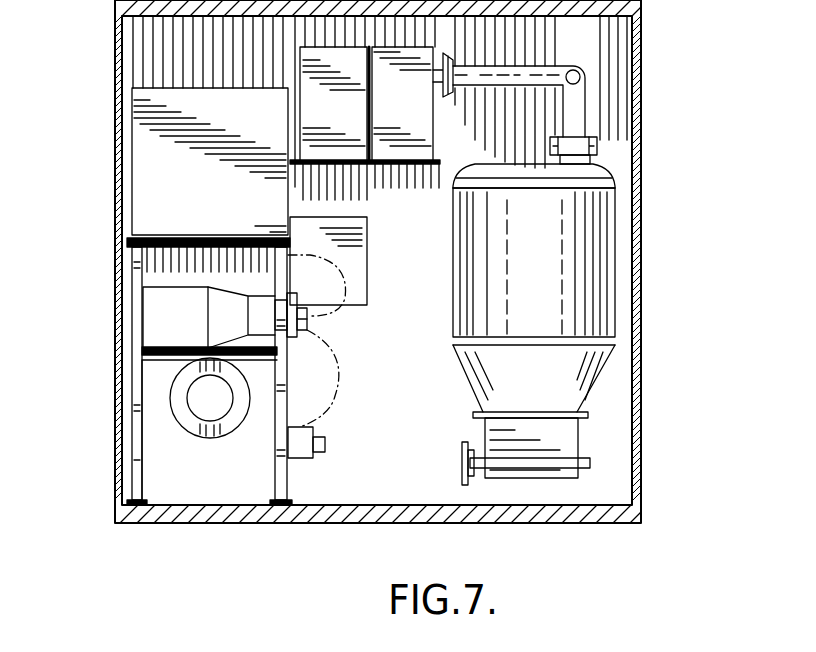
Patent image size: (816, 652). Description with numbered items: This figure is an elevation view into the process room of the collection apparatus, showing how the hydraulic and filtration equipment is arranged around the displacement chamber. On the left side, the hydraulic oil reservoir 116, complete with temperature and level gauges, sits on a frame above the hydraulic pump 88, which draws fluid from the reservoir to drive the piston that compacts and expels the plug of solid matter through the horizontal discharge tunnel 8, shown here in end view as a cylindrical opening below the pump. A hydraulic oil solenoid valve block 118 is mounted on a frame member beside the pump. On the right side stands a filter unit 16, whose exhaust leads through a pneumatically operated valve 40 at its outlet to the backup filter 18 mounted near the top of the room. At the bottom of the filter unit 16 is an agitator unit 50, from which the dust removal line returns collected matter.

The horizontal discharge tunnel 8 is at (220, 412).
The filter unit 16 is at (593, 172).
The backup filter 18 is at (420, 113).
The pneumatically operated valve 40 is at (600, 143).
The agitator unit 50 is at (510, 468).
The hydraulic pump 88 is at (170, 320).
The hydraulic oil reservoir 116 is at (150, 165).
The hydraulic oil solenoid valve block 118 is at (320, 430).